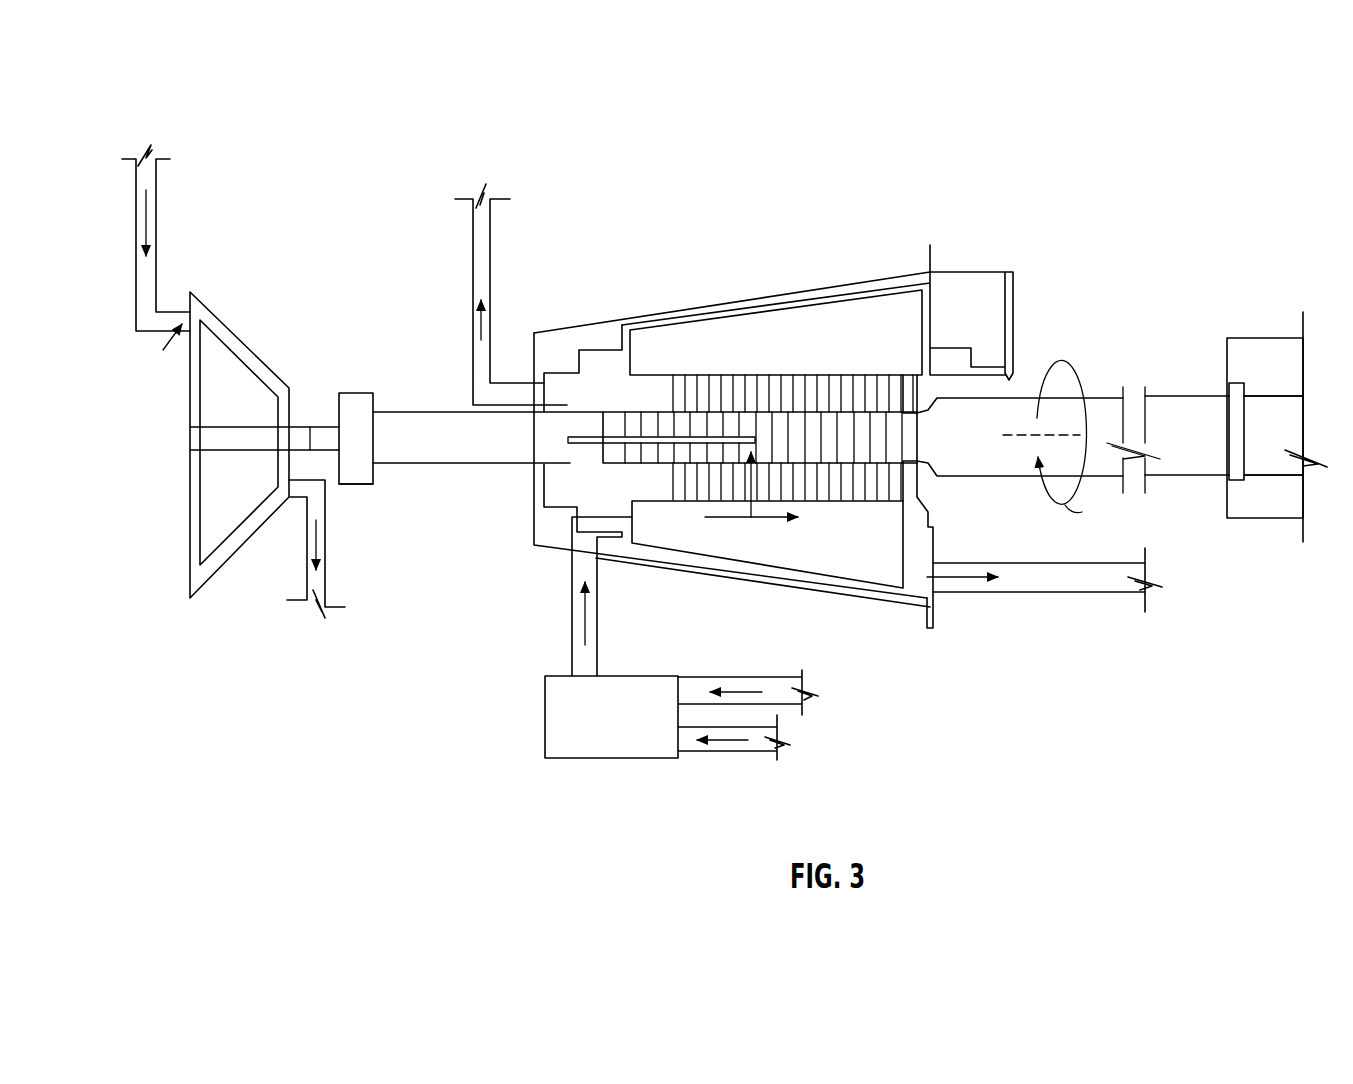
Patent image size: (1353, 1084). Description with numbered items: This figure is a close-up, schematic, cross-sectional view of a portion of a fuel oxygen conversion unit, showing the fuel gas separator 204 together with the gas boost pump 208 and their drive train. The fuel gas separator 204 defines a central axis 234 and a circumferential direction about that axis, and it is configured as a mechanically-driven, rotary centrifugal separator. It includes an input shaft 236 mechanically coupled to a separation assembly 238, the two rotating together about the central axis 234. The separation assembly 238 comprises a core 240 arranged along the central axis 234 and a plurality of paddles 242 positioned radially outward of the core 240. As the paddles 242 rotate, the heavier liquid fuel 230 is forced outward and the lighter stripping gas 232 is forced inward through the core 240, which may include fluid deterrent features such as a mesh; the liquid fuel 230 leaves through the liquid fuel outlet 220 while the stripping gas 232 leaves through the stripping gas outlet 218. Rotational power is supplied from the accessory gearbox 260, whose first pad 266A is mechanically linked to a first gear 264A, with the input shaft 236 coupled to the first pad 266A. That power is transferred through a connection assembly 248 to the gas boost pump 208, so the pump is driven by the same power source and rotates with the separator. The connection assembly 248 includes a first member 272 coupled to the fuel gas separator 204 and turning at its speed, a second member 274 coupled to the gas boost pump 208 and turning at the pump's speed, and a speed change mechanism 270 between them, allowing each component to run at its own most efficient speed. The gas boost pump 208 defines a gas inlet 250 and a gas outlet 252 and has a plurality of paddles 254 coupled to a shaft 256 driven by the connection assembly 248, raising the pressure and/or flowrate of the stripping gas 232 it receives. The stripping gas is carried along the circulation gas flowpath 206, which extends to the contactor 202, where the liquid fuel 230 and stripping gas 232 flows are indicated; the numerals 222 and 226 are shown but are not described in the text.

The contactor 202 is at (587, 760).
The fuel gas separator 204 is at (766, 207).
The circulation gas flowpath 206 is at (159, 222).
The gas boost pump 208 is at (237, 332).
The stripping gas outlet 218 is at (523, 391).
The liquid fuel outlet 220 is at (1024, 591).
The electrical connection 222 is at (594, 568).
The electrical line 226 is at (752, 753).
The liquid fuel 230 is at (968, 577).
The stripping gas 232 is at (143, 240).
The central axis 234 is at (1072, 432).
The input shaft 236 is at (1005, 413).
The separation assembly 238 is at (780, 290).
The core 240 is at (853, 514).
The paddles 242 is at (851, 352).
The connection assembly 248 is at (352, 377).
The gas inlet 250 is at (151, 346).
The gas outlet 252 is at (301, 490).
The paddles 254 is at (245, 372).
The shaft 256 is at (210, 444).
The accessory gearbox 260 is at (1262, 317).
The first gear 264A is at (1277, 457).
The first pad 266A is at (1237, 383).
The speed change mechanism 270 is at (360, 476).
The first member 272 is at (444, 452).
The second member 274 is at (320, 427).